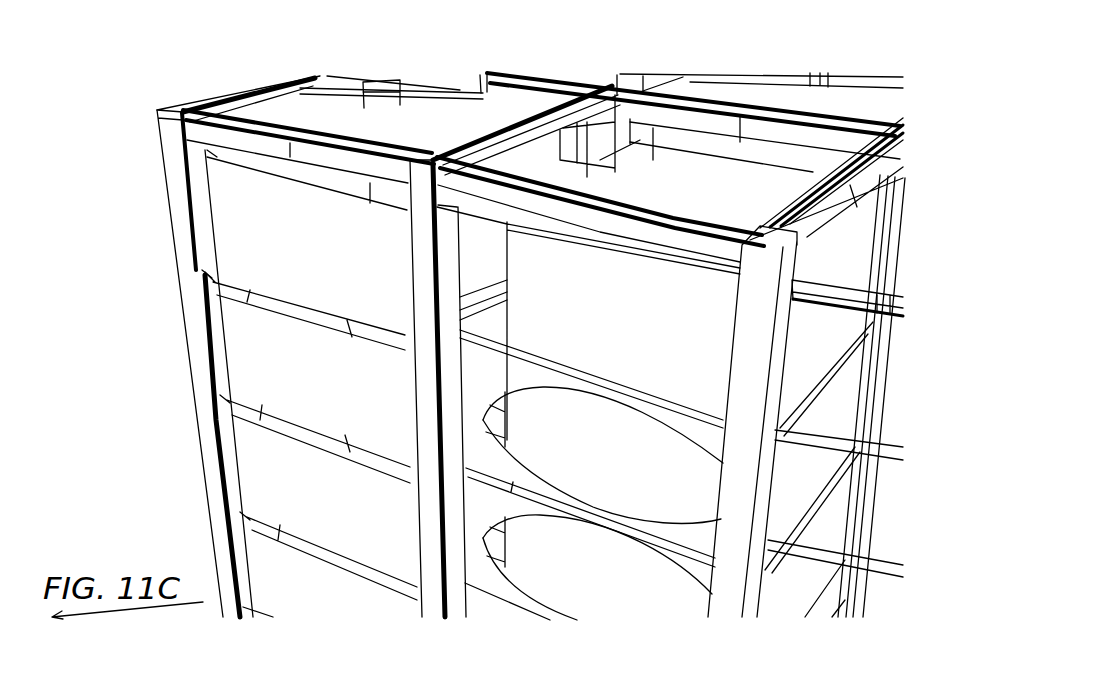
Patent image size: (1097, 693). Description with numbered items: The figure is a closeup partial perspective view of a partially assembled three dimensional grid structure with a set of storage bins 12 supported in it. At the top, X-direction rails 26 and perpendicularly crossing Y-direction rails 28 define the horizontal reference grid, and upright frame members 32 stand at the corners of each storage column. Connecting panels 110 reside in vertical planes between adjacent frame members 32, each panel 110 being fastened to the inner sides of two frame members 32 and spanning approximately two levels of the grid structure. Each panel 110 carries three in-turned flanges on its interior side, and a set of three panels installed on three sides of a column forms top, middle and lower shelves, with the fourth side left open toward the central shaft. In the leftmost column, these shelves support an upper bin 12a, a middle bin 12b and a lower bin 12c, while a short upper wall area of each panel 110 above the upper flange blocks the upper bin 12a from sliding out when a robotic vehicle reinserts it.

The storage bin 12 is at (614, 306).
The upper bin 12a is at (239, 241).
The middle bin 12b is at (246, 372).
The lower bin 12c is at (265, 470).
The X-direction rail 26 is at (613, 223).
The Y-direction rail 28 is at (265, 108).
The frame member 32 is at (183, 297).
The connecting panel 110 is at (213, 330).